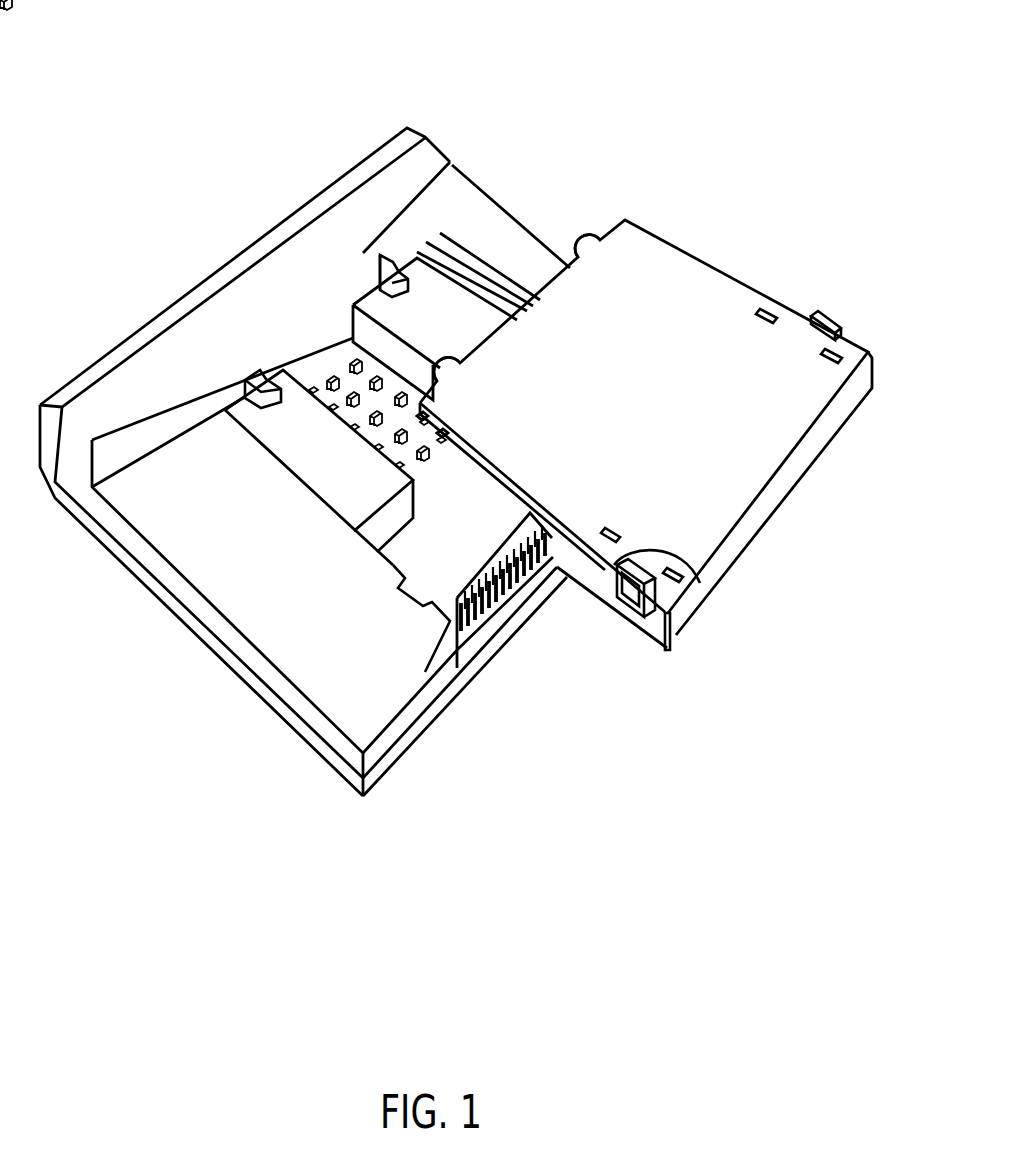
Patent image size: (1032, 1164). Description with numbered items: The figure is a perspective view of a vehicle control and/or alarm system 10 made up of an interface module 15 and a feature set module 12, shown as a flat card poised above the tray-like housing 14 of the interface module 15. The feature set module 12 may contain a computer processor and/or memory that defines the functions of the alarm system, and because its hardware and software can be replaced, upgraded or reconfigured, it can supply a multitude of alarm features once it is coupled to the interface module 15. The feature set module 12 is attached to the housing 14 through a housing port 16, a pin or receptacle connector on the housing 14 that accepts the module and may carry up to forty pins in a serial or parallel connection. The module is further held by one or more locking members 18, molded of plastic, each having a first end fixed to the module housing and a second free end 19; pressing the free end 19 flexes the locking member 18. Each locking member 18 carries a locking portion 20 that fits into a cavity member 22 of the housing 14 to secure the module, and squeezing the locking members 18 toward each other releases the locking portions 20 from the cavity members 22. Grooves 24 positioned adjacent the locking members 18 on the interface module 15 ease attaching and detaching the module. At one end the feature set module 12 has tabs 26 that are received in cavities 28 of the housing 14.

The vehicle control and/or alarm system 10 is at (669, 49).
The feature set module 12 is at (712, 248).
The housing 14 is at (190, 620).
The interface module 15 is at (236, 233).
The housing port 16 is at (473, 628).
The locking members 18 is at (816, 314).
The free end 19 is at (620, 596).
The locking portion 20 is at (630, 612).
The cavity member 22 is at (390, 582).
The grooves 24 is at (383, 577).
The tabs 26 is at (455, 362).
The cavities 28 is at (378, 256).